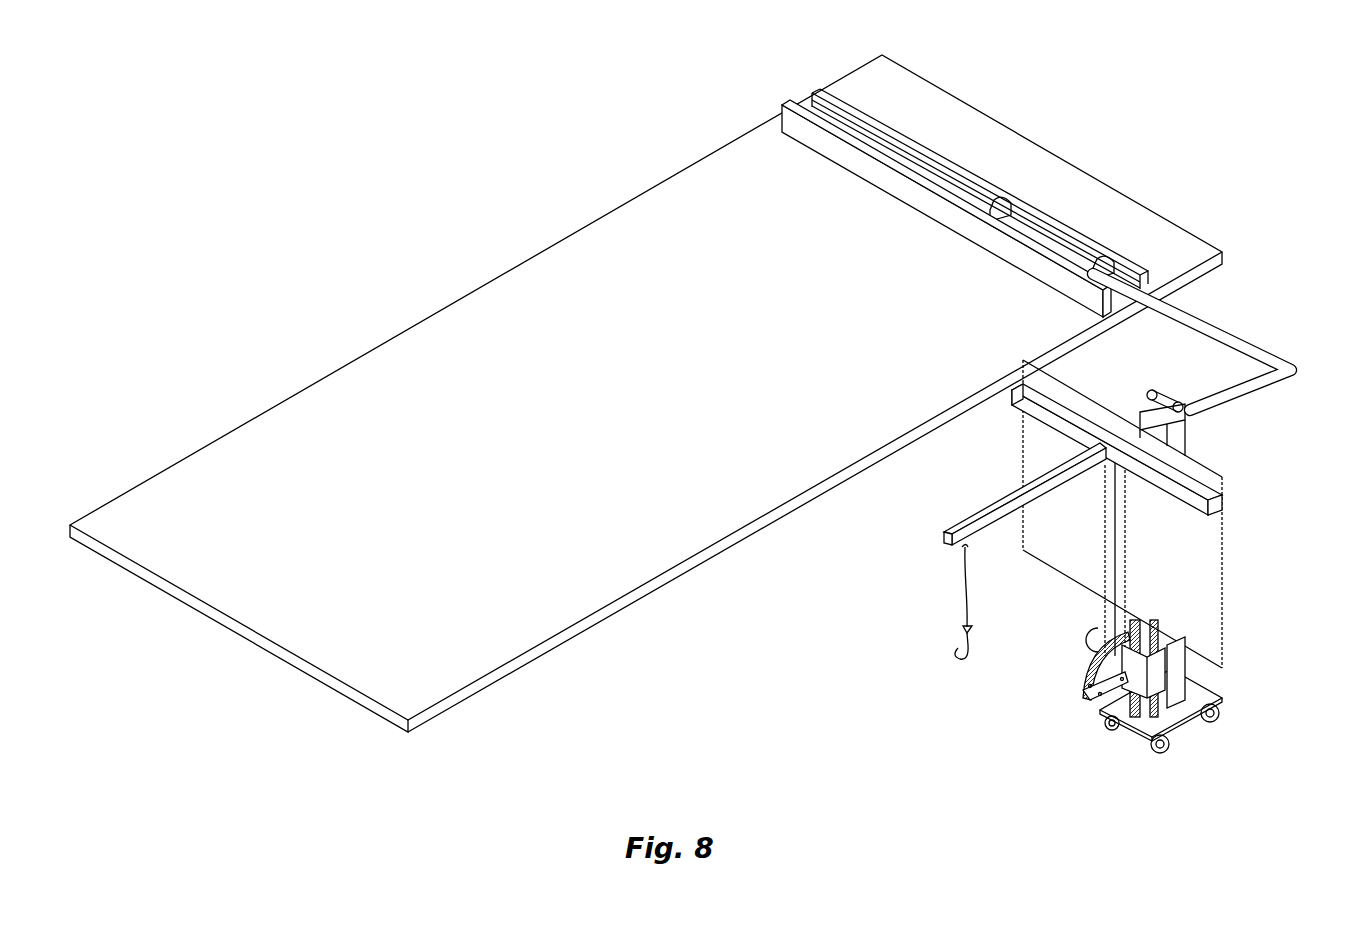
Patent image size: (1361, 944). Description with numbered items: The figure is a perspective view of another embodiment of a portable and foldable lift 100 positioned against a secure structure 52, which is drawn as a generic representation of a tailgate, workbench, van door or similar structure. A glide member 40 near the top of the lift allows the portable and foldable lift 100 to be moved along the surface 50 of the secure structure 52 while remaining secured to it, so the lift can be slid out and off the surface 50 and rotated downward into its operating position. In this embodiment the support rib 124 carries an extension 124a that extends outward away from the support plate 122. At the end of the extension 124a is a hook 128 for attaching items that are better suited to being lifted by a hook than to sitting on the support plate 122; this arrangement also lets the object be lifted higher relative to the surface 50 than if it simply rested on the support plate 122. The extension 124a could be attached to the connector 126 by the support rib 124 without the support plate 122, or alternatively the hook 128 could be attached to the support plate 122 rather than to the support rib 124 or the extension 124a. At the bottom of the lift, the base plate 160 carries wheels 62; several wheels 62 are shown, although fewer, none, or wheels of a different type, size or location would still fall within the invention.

The portable and foldable lift 100 is at (1095, 449).
The secure structure 52 is at (1098, 178).
The surface 50 is at (694, 404).
The glide member 40 is at (1217, 326).
The support rib 124 is at (1192, 489).
The extension 124a is at (992, 533).
The support plate 122 is at (1222, 590).
The hook 128 is at (963, 632).
The connector 126 is at (1088, 671).
The base plate 160 is at (1135, 737).
The wheels 62 is at (1218, 730).